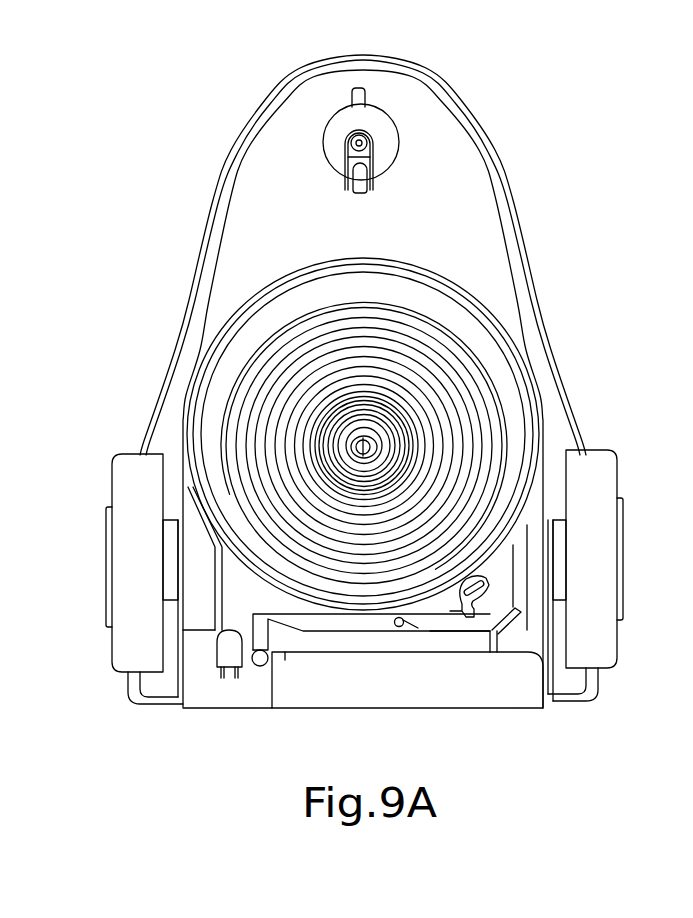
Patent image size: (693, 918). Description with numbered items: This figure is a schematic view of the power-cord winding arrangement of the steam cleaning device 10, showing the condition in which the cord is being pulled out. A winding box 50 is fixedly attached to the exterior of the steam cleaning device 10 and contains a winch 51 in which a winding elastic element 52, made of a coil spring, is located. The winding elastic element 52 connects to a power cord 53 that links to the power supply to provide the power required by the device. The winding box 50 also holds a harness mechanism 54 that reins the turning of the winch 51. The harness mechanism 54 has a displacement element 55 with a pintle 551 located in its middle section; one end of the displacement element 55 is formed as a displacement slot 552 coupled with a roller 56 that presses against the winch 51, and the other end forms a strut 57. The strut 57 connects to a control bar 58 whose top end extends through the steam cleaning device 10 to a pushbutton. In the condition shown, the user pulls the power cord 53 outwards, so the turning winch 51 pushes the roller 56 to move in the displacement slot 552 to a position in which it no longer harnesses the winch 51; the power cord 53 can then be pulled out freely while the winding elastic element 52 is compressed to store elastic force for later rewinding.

The steam cleaning device 10 is at (541, 236).
The winding box 50 is at (215, 567).
The winch 51 is at (547, 438).
The winding elastic element 52 is at (406, 419).
The power cord 53 is at (225, 647).
The harness mechanism 54 is at (412, 642).
The displacement element 55 is at (355, 623).
The pintle 551 is at (395, 635).
The displacement slot 552 is at (485, 588).
The roller 56 is at (462, 615).
The strut 57 is at (226, 678).
The control bar 58 is at (262, 667).